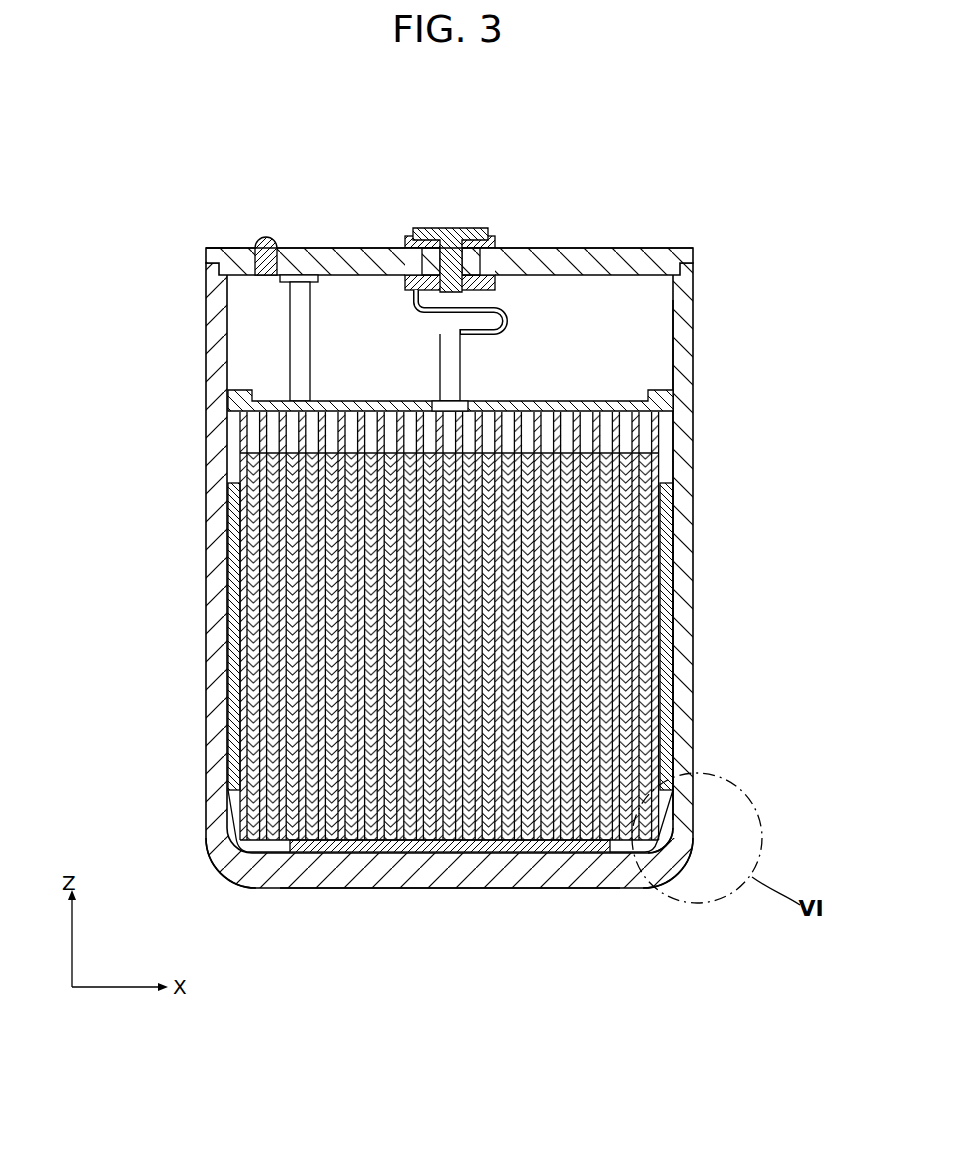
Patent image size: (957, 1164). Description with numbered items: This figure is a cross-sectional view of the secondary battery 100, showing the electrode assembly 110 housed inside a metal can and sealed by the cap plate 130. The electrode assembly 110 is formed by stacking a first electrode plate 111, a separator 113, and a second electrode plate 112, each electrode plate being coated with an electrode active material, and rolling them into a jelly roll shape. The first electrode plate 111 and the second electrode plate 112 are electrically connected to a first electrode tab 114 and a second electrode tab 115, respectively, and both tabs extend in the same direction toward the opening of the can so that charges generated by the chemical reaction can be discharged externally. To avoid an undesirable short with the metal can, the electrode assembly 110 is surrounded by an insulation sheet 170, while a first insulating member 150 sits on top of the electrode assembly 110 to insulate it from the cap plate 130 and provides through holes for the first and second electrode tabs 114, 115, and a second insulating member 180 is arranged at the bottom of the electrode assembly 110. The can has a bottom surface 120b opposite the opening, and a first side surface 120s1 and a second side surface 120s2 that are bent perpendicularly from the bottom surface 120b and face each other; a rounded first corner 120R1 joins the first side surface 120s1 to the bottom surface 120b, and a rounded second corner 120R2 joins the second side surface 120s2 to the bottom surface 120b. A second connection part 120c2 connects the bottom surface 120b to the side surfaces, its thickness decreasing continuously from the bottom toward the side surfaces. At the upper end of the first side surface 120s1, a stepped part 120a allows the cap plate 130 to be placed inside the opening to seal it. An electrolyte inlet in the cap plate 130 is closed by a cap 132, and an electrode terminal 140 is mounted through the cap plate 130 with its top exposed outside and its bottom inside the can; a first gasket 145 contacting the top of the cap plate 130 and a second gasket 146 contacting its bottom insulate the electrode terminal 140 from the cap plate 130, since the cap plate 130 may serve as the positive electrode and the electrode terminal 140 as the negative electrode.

The secondary battery 100 is at (735, 190).
The electrode assembly 110 is at (793, 450).
The first electrode plate 111 is at (665, 510).
The second electrode plate 112 is at (665, 466).
The separator 113 is at (665, 490).
The first electrode tab 114 is at (457, 353).
The second electrode tab 115 is at (300, 330).
The stepped part 120a is at (208, 266).
The first side surface 120s1 is at (217, 395).
The second side surface 120s2 is at (690, 380).
The bottom surface 120b is at (458, 873).
The first corner 120R1 is at (227, 883).
The second corner 120R2 is at (672, 878).
The second connection part 120c2 is at (650, 800).
The cap plate 130 is at (614, 248).
The cap 132 is at (266, 243).
The electrode terminal 140 is at (450, 228).
The first gasket 145 is at (497, 257).
The second gasket 146 is at (383, 257).
The first insulating member 150 is at (660, 406).
The insulation sheet 170 is at (233, 711).
The second insulating member 180 is at (352, 845).